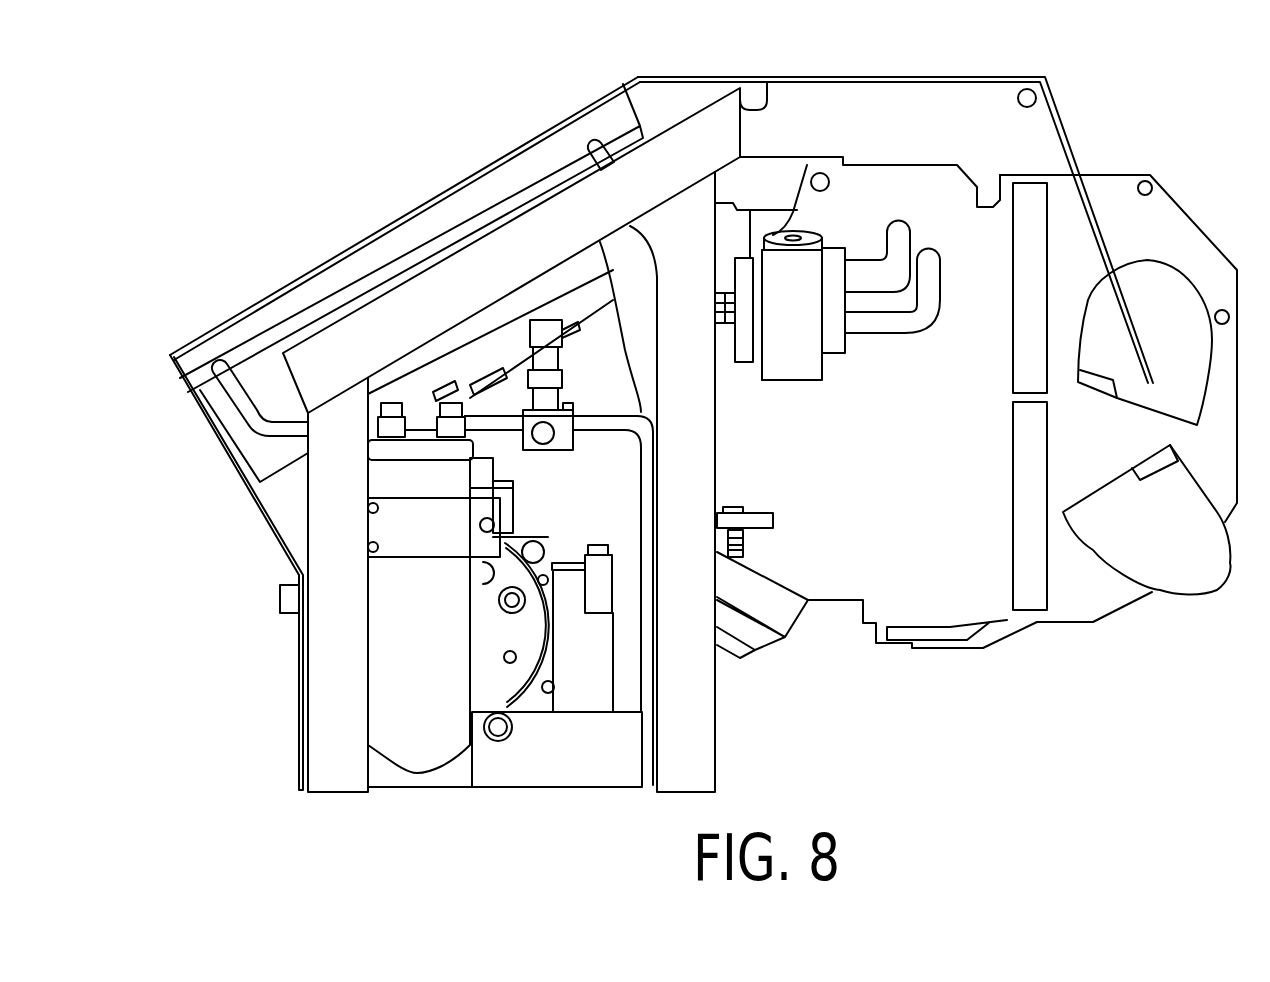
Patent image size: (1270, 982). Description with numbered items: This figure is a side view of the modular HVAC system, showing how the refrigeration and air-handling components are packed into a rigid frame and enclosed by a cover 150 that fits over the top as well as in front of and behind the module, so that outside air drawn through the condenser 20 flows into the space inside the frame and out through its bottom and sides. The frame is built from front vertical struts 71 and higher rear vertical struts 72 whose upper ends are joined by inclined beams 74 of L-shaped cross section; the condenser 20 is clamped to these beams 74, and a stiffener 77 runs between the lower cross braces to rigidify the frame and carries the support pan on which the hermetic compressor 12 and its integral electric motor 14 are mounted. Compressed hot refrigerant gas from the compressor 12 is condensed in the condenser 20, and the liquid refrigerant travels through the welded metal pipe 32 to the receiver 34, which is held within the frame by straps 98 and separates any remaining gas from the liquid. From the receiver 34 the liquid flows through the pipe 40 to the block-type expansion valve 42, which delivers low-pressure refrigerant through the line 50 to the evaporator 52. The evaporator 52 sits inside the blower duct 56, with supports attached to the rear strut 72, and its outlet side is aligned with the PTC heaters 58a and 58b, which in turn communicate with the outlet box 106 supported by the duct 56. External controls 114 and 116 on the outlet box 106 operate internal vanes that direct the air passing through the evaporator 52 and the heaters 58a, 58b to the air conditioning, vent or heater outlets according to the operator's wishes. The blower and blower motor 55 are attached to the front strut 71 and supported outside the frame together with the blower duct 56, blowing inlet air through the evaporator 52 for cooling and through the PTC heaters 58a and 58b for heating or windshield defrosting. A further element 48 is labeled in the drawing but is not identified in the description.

The cover 150 is at (805, 73).
The condenser 20 is at (327, 287).
The inclined beams 74 is at (433, 287).
The line 32 is at (243, 424).
The rail 48 is at (620, 268).
The front vertical struts 71 is at (353, 597).
The rear vertical struts 72 is at (702, 597).
The receiver 34 is at (437, 670).
The straps 98 is at (435, 545).
The line 40 is at (503, 434).
The block-type expansion valve 42 is at (561, 446).
The line 50 is at (612, 426).
The hermetic compressor 12 is at (500, 684).
The electric motor 14 is at (538, 729).
The stiffener 77 is at (490, 763).
The blower duct 56 is at (893, 477).
The evaporator 52 is at (938, 252).
The PTC heater 58a is at (1027, 337).
The PTC heater 58b is at (1030, 550).
The outlet box 106 is at (1177, 228).
The control 114 is at (1187, 353).
The control 116 is at (1185, 560).
The blower and blower motor 55 is at (953, 633).